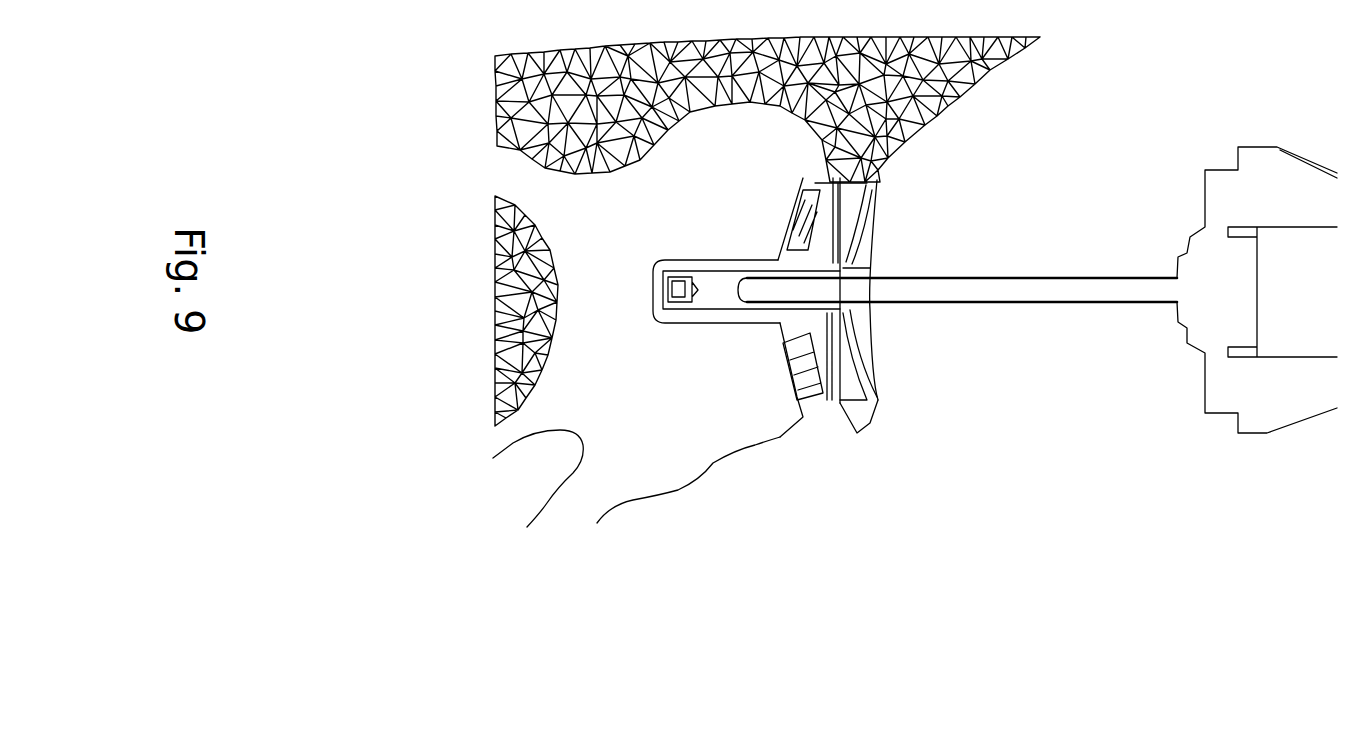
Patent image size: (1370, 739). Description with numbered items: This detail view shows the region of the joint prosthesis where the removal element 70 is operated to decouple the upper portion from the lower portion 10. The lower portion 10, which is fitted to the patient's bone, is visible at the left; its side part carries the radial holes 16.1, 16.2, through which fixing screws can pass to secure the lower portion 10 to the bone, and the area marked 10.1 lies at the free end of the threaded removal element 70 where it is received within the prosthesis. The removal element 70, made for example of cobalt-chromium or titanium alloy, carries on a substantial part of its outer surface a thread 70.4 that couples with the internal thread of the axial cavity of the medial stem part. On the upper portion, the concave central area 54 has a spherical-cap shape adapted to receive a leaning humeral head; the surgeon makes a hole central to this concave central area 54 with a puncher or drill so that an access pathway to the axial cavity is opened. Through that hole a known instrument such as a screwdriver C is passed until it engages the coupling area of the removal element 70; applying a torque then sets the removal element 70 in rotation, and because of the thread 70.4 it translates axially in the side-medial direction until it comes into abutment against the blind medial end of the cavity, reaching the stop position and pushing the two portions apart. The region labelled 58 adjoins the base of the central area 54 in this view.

The lower portion 10 is at (821, 419).
The anchor head 10.1 is at (641, 283).
The radial hole 16.1 is at (792, 364).
The radial hole 16.2 is at (795, 198).
The concave central area 54 is at (870, 241).
The collar base 58 is at (896, 421).
The removal element 70 is at (706, 303).
The thread 70.4 is at (706, 266).
The screwdriver C is at (1217, 392).